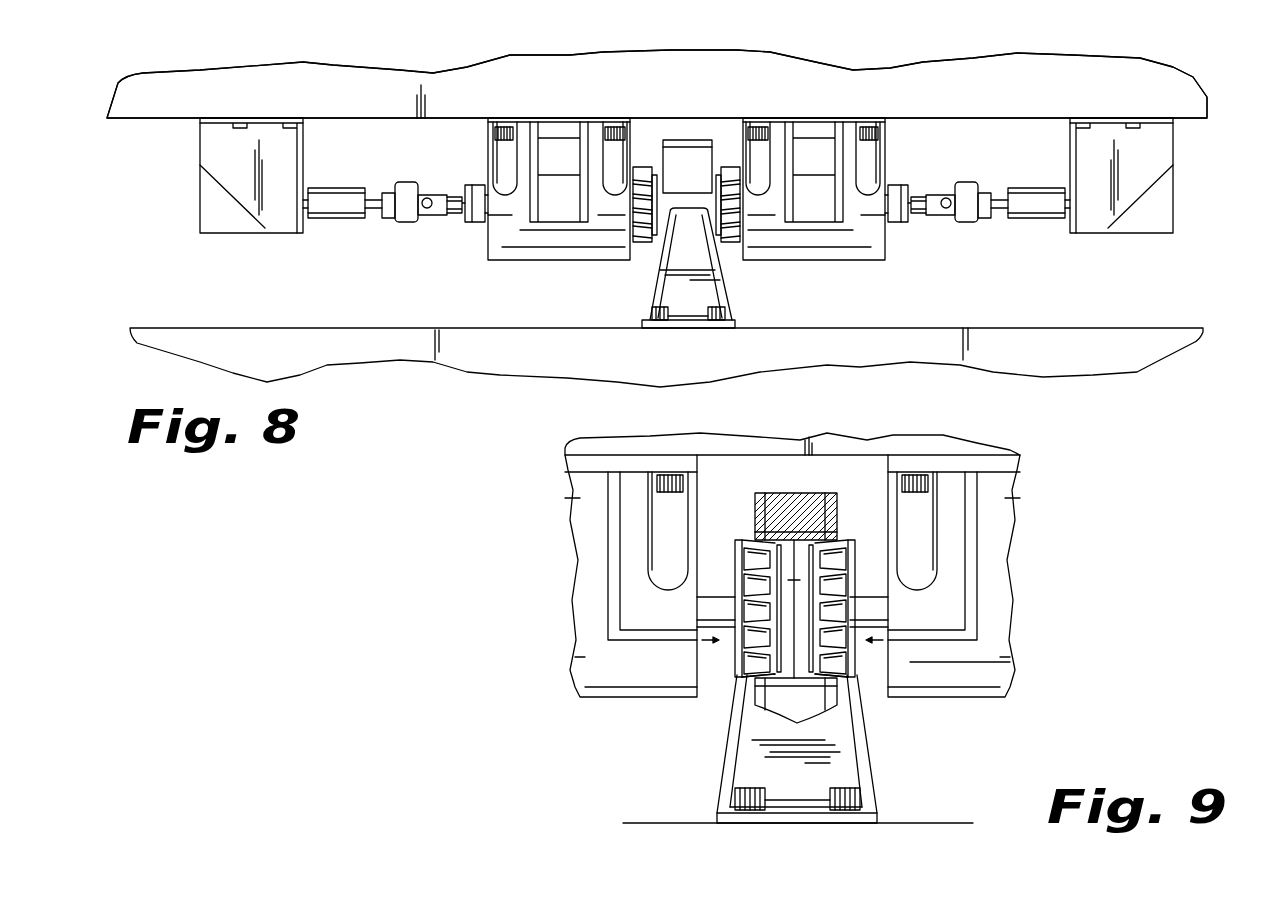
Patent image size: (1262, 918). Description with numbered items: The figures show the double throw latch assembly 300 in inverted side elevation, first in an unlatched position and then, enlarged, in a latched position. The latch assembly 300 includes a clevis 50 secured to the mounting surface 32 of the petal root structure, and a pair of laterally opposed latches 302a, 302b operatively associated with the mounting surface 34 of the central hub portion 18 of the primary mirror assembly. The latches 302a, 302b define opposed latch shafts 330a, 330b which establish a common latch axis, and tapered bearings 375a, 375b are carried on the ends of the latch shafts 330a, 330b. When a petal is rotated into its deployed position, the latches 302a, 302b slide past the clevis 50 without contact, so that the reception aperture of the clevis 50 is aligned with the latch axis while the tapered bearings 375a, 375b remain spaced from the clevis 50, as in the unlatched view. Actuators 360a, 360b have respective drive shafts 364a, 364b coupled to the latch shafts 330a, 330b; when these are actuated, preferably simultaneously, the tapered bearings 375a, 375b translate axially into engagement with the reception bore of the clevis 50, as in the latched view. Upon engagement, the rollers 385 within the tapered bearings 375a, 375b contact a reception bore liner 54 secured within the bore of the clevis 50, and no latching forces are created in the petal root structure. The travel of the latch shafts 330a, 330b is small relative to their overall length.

In FIG. 8, the central hub portion 18 is at (153, 98).
In FIG. 8, the mounting surface 32 is at (1033, 326).
In FIG. 9, the mounting surface 32 is at (635, 823).
In FIG. 8, the mounting surface 34 is at (952, 127).
In FIG. 9, the mounting surface 34 is at (745, 457).
In FIG. 8, the clevis 50 is at (687, 140).
In FIG. 9, the clevis 50 is at (718, 810).
In FIG. 9, the reception bore liner 54 is at (817, 497).
In FIG. 8, the latch assembly 300 is at (657, 218).
In FIG. 8, the latch 302a is at (507, 253).
In FIG. 9, the latch 302a is at (605, 690).
In FIG. 8, the latch 302b is at (857, 242).
In FIG. 9, the latch 302b is at (987, 685).
In FIG. 9, the latch shaft 330a is at (707, 608).
In FIG. 9, the latch shaft 330b is at (875, 608).
In FIG. 8, the actuator 360a is at (223, 228).
In FIG. 8, the actuator 360b is at (1143, 222).
In FIG. 8, the drive shaft 364a is at (342, 197).
In FIG. 8, the drive shaft 364b is at (1025, 198).
In FIG. 8, the tapered bearing 375a is at (643, 163).
In FIG. 9, the tapered bearing 375a is at (732, 557).
In FIG. 8, the tapered bearing 375b is at (733, 160).
In FIG. 9, the tapered bearing 375b is at (855, 547).
In FIG. 9, the rollers 385 is at (740, 657).